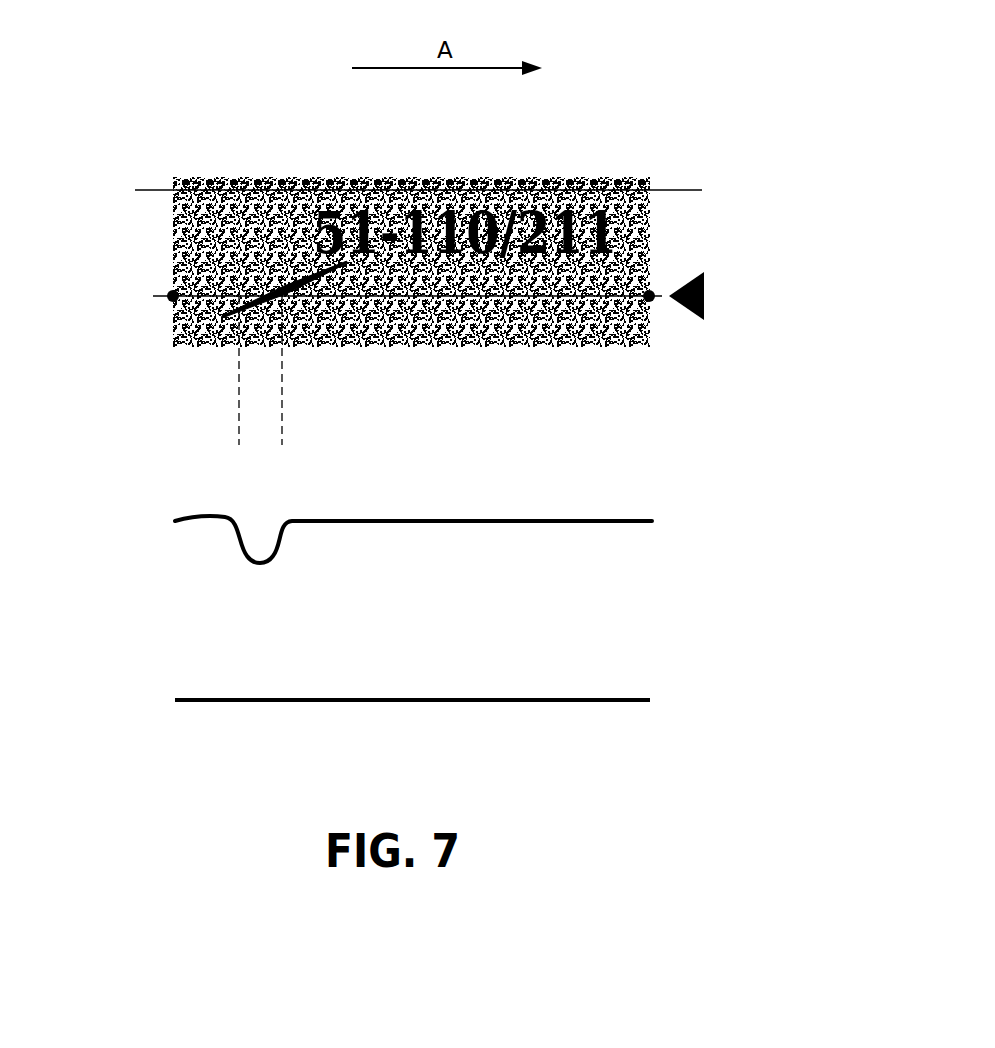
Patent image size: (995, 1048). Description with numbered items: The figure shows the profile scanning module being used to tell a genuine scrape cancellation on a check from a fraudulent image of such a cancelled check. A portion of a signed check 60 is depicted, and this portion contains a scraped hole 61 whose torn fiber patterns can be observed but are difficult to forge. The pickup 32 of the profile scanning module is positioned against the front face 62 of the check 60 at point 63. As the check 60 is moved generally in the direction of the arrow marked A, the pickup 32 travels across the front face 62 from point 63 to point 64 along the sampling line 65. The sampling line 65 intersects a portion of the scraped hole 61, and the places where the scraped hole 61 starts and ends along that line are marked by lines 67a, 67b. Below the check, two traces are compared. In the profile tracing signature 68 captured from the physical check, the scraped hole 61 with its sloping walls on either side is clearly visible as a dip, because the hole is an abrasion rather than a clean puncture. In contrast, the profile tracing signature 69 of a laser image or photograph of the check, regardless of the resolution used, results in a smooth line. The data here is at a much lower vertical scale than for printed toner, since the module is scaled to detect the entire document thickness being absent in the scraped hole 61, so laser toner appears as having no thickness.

The pickup 32 is at (683, 278).
The check 60 is at (548, 190).
The scraped hole 61 is at (293, 277).
The front face 62 is at (436, 190).
The point 63 is at (650, 302).
The point 64 is at (173, 290).
The sampling line 65 is at (157, 298).
The line 67a is at (233, 388).
The line 67b is at (295, 388).
The profile tracing signature 68 is at (513, 522).
The profile tracing signature 69 is at (517, 697).